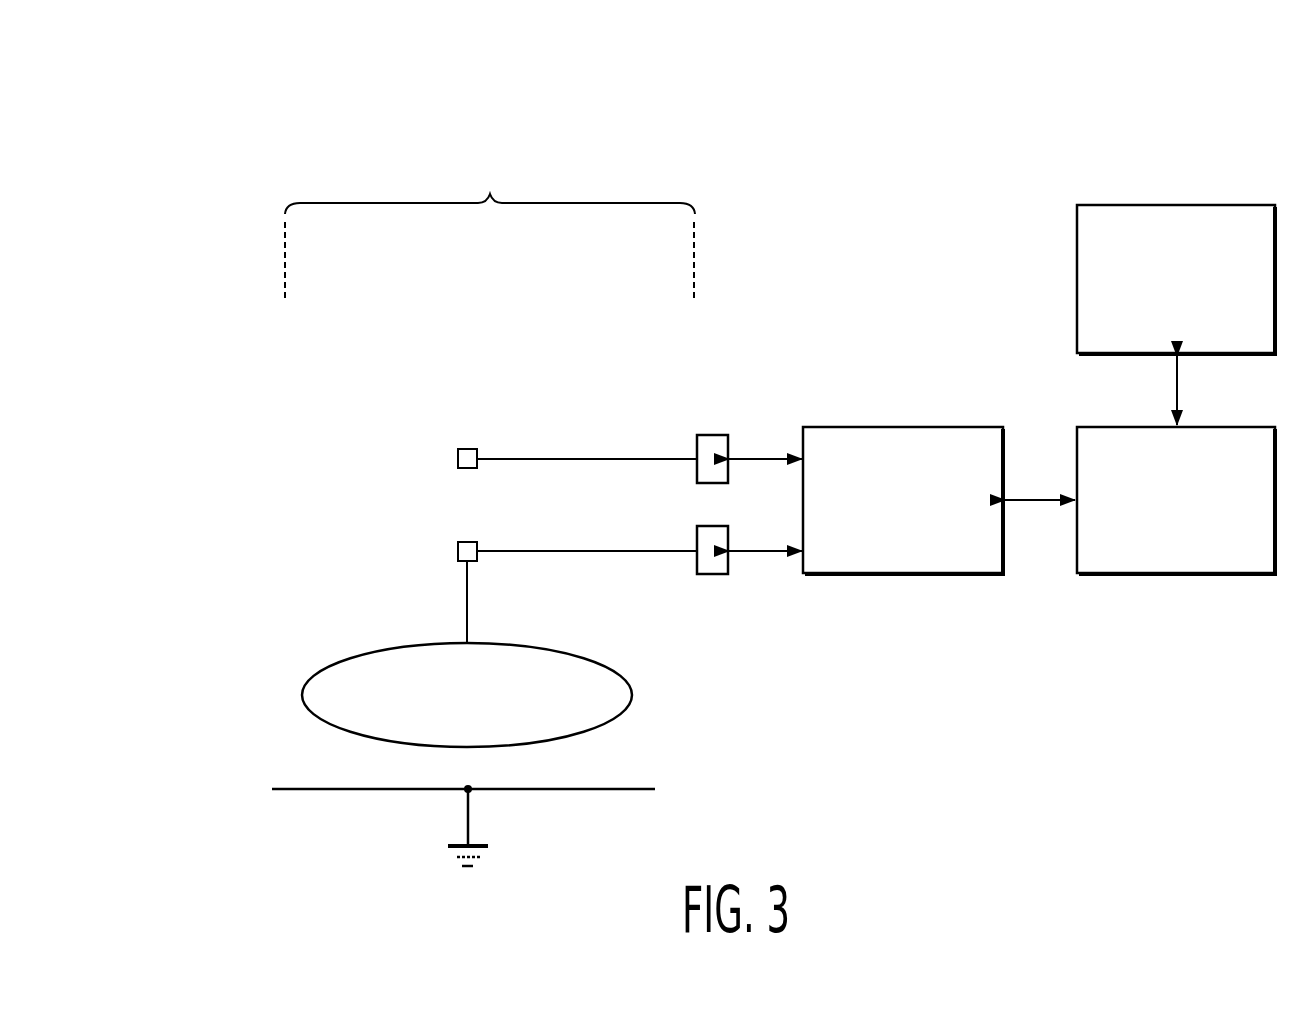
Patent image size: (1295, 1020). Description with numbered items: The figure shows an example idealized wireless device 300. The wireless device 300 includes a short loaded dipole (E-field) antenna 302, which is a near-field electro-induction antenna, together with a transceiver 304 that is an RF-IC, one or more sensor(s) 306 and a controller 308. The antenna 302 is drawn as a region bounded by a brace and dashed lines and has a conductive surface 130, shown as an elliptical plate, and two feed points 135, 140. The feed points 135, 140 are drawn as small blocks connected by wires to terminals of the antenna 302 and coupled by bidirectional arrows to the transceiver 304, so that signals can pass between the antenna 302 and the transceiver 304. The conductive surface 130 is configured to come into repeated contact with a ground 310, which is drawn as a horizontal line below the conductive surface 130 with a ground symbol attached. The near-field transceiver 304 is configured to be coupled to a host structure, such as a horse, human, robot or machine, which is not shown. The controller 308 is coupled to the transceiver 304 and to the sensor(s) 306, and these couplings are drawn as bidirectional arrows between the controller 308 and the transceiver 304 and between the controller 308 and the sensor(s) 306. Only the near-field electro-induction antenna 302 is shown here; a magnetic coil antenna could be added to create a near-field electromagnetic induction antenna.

The idealized wireless device 300 is at (200, 147).
The short loaded dipole antenna 302 is at (490, 230).
The conductive surface 130 is at (305, 682).
The feed point 135 is at (716, 435).
The feed point 140 is at (713, 574).
The transceiver 304 is at (905, 427).
The sensor(s) 306 is at (1076, 248).
The controller 308 is at (1178, 574).
The ground 310 is at (484, 852).